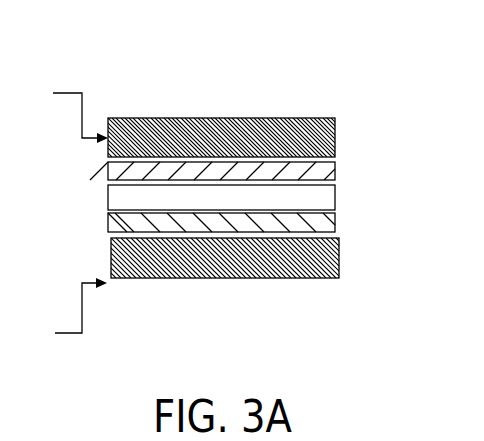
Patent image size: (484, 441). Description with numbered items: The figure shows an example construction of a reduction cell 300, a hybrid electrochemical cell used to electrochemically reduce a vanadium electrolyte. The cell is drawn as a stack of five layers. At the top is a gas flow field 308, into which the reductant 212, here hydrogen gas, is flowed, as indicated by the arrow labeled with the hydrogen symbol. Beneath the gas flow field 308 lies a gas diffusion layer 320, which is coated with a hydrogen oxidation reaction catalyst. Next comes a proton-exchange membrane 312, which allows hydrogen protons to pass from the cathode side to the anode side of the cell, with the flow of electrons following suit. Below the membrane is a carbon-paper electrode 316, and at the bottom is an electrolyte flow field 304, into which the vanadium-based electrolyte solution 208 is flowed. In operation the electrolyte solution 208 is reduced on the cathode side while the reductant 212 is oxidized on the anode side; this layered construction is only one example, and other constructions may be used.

The reduction cell 300 is at (283, 46).
The gas flow field 308 is at (335, 138).
The gas diffusion layer 320 is at (335, 172).
The proton-exchange membrane 312 is at (335, 202).
The carbon-paper electrode 316 is at (336, 222).
The electrolyte flow field 304 is at (339, 262).
The reductant 212 is at (72, 93).
The vanadium-based electrolyte solution 208 is at (84, 315).